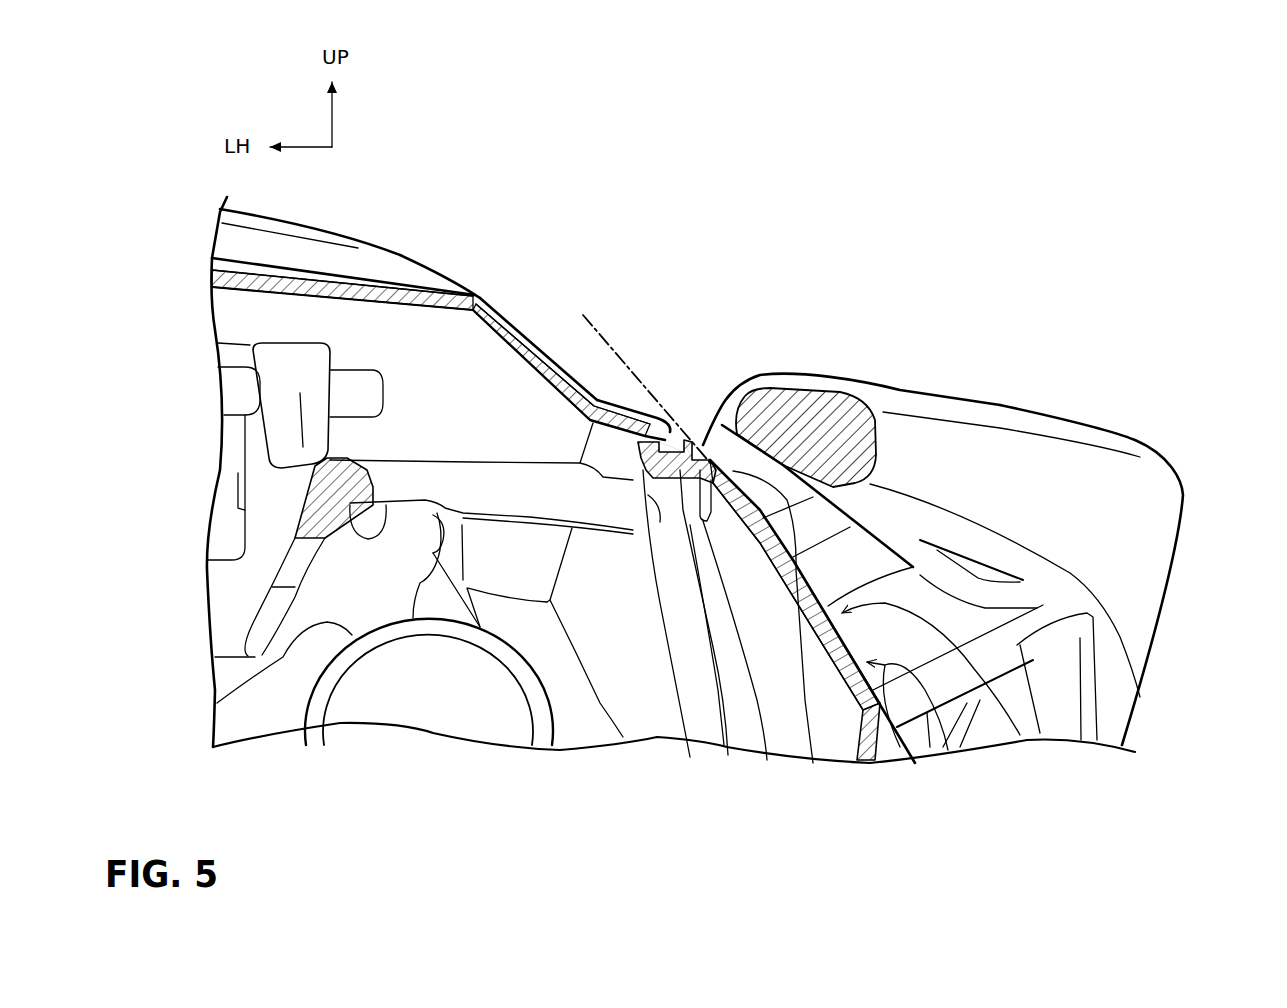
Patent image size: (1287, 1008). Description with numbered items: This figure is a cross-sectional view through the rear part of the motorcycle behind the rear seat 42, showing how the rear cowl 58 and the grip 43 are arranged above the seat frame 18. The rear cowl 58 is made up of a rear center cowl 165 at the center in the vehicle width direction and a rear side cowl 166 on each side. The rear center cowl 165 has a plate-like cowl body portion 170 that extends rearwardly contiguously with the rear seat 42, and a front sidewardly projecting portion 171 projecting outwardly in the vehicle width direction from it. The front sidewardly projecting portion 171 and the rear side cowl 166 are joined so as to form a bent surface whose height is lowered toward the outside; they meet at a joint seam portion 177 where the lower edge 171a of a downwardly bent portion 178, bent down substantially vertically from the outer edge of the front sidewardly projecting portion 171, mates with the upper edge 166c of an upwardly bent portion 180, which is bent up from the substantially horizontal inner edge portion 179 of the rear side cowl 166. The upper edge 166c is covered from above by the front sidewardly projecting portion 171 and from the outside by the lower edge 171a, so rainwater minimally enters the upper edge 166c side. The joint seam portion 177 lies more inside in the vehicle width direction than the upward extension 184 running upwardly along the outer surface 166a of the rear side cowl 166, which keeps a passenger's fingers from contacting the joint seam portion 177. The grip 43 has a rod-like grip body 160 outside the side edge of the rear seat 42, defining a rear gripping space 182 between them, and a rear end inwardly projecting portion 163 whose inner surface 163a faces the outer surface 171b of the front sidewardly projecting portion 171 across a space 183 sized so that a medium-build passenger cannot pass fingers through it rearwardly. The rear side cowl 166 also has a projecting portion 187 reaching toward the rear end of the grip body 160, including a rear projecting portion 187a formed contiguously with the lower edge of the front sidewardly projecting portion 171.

The seat frame 18 is at (407, 633).
The rear seat 42 is at (247, 212).
The grip 43 is at (1107, 425).
The rear cowl 58 is at (557, 340).
The grip body 160 is at (1047, 452).
The rear end inwardly projecting portion 163 is at (840, 377).
The inner surface 163a is at (775, 380).
The rear center cowl 165 is at (480, 294).
The rear side cowl 166 is at (937, 757).
The outer surface 166a is at (983, 747).
The upper edge 166c is at (640, 440).
The cowl body portion 170 is at (338, 312).
The front sidewardly projecting portion 171 is at (657, 473).
The lower edge 171a is at (707, 428).
The outer surface 171b is at (669, 441).
The joint seam portion 177 is at (705, 455).
The downwardly bent portion 178 is at (645, 437).
The inner edge portion 179 is at (767, 760).
The upwardly bent portion 180 is at (690, 757).
The rear gripping space 182 is at (872, 567).
The space 183 is at (727, 392).
The upward extension 184 is at (598, 330).
The projecting portion 187 is at (1020, 733).
The rear projecting portion 187a is at (813, 763).